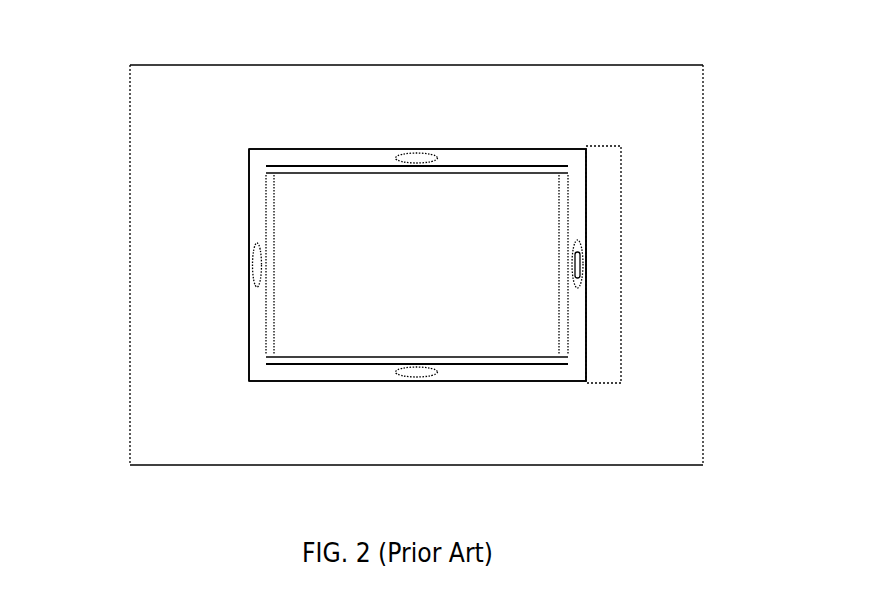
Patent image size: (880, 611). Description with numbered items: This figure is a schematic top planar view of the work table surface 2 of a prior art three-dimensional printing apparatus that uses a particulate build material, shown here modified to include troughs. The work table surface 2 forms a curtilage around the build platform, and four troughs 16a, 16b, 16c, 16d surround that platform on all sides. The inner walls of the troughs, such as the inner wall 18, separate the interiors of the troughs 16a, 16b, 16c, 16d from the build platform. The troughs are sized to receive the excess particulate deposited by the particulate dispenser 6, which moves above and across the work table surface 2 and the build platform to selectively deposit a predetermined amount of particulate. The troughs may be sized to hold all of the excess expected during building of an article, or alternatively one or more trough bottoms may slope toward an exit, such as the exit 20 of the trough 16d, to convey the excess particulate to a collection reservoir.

The work table surface 2 is at (397, 80).
The particulate dispenser 6 is at (609, 160).
The trough 16a is at (300, 158).
The trough 16b is at (577, 338).
The trough 16c is at (473, 374).
The trough 16d is at (260, 329).
The inner wall 18 is at (532, 167).
The exit 20 is at (253, 262).